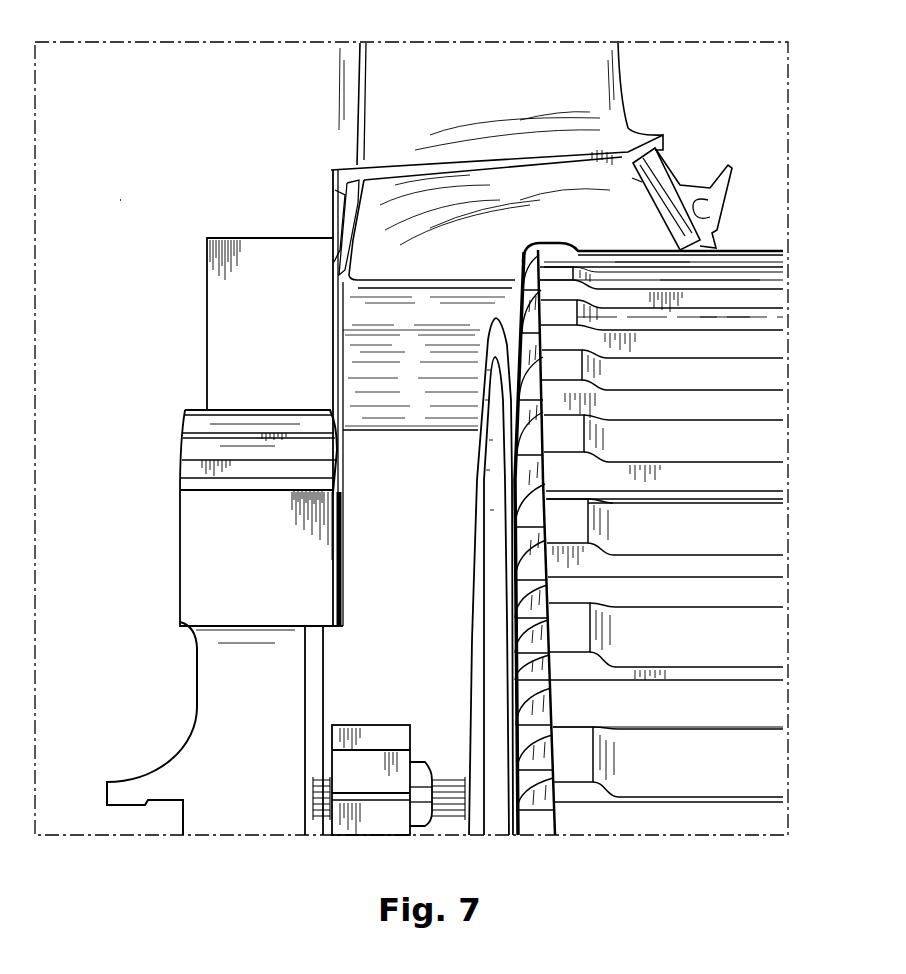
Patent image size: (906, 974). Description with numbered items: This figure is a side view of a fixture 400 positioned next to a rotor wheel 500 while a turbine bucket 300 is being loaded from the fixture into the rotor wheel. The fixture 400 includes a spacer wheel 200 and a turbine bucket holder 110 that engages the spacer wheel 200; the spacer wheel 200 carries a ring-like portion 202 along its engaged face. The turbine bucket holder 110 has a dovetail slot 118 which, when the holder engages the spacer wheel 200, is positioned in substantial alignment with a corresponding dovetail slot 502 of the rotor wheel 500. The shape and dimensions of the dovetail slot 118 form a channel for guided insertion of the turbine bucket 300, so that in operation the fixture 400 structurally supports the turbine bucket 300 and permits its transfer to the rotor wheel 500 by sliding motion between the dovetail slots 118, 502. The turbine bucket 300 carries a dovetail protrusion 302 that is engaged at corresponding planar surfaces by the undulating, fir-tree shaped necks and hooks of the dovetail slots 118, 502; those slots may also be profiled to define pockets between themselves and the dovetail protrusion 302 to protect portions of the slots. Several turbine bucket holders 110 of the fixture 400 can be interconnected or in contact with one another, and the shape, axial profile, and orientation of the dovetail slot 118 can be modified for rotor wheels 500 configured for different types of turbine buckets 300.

The turbine bucket holder 110 is at (215, 295).
The dovetail slot 118 is at (207, 243).
The spacer wheel 200 is at (240, 536).
The rotor seal arm / ring 202 is at (182, 470).
The turbine bucket 300 is at (602, 102).
The dovetail protrusion 302 is at (362, 355).
The fixture 400 is at (176, 190).
The rotor wheel 500 is at (630, 768).
The dovetail slot 502 is at (648, 563).